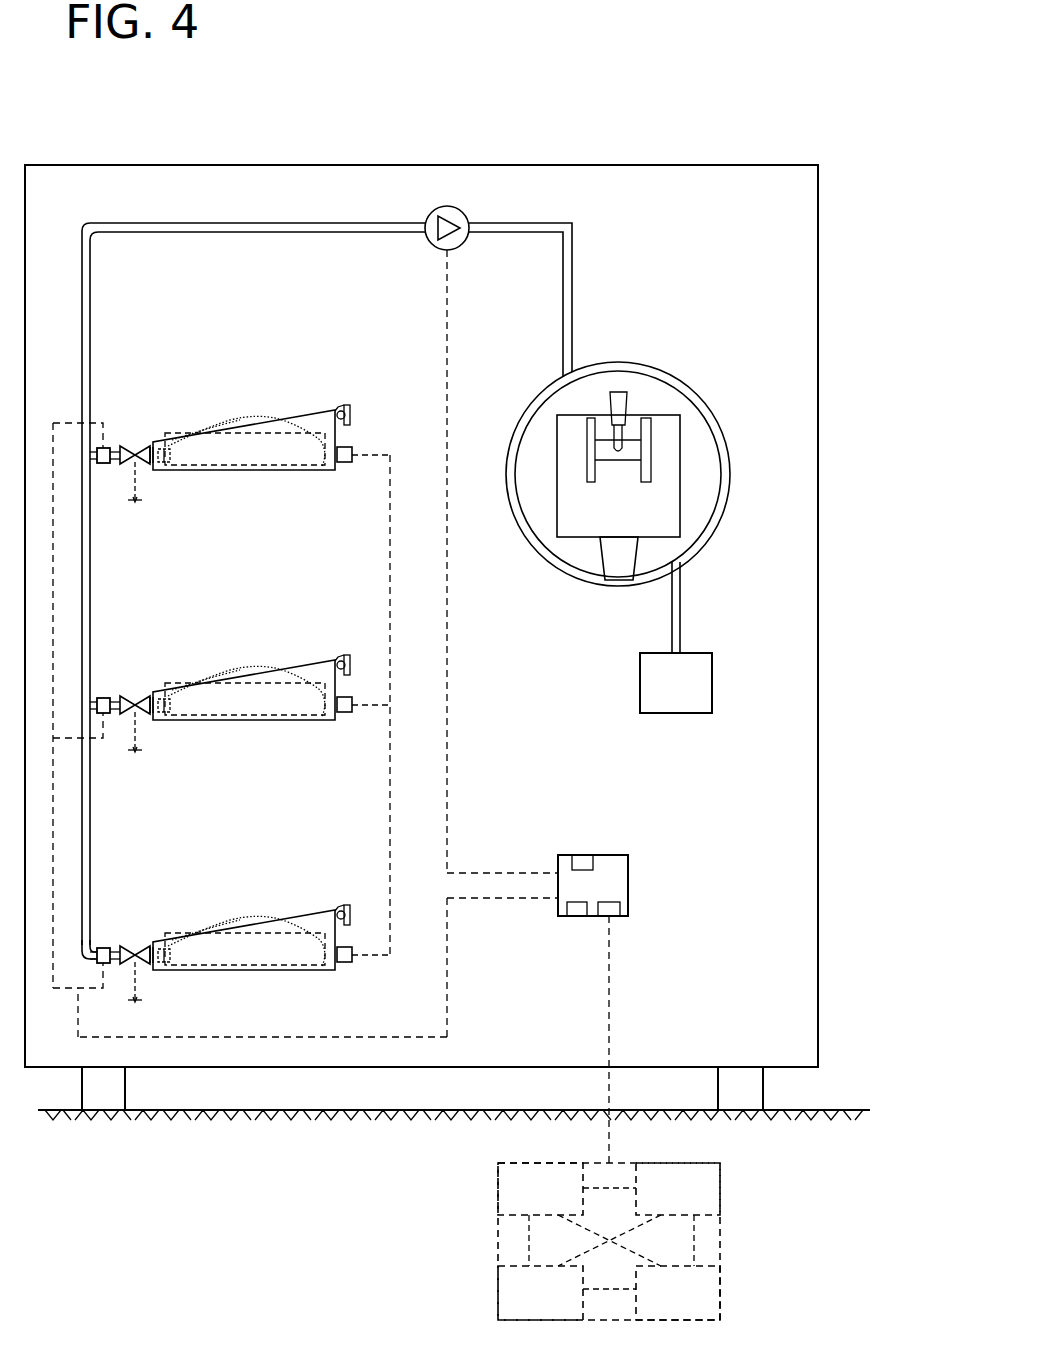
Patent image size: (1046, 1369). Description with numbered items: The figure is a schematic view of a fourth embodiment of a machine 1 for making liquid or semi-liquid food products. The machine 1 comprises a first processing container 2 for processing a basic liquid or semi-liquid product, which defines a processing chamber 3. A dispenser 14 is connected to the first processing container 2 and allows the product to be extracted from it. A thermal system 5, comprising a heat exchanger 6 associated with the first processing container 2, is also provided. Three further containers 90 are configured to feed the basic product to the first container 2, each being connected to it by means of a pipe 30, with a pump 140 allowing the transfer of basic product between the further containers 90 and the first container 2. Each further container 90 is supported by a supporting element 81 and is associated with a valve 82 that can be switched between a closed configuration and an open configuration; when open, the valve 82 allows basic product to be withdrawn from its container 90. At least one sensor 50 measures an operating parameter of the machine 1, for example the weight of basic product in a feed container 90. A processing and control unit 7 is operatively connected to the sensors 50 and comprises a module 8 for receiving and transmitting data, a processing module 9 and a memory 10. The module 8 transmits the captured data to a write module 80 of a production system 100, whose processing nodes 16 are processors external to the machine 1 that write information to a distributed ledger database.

The machine 1 is at (598, 132).
The first processing container 2 is at (635, 468).
The processing chamber 3 is at (635, 468).
The thermal system 5 is at (684, 697).
The heat exchanger 6 is at (704, 388).
The processing and control unit 7 is at (625, 868).
The module for receiving and transmitting data 8 is at (620, 909).
The processing module 9 is at (580, 856).
The memory 10 is at (577, 917).
The dispenser 14 is at (683, 475).
The processing nodes 16 is at (687, 1241).
The pipe 30 is at (508, 213).
The sensor 50 is at (108, 446).
The write module 80 is at (530, 1202).
The supporting element 81 is at (233, 474).
The valve 82 is at (143, 474).
The further container 90 is at (222, 416).
The production system 100 is at (687, 1241).
The pump 140 is at (437, 248).